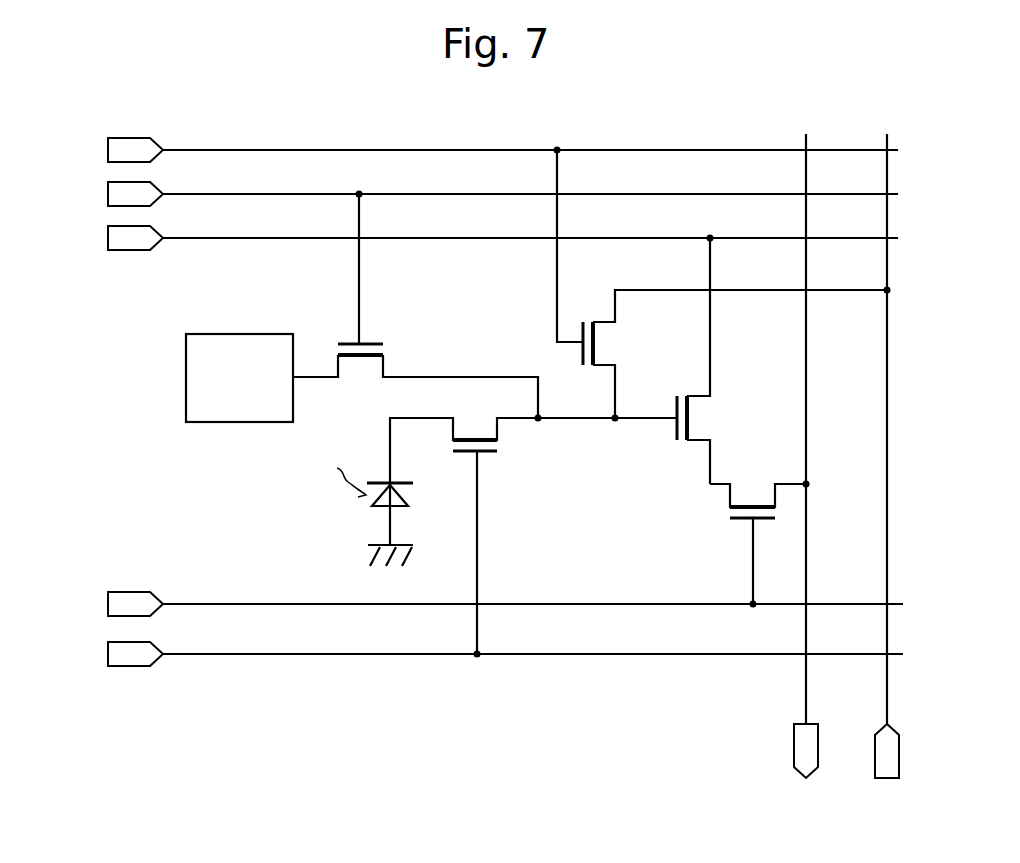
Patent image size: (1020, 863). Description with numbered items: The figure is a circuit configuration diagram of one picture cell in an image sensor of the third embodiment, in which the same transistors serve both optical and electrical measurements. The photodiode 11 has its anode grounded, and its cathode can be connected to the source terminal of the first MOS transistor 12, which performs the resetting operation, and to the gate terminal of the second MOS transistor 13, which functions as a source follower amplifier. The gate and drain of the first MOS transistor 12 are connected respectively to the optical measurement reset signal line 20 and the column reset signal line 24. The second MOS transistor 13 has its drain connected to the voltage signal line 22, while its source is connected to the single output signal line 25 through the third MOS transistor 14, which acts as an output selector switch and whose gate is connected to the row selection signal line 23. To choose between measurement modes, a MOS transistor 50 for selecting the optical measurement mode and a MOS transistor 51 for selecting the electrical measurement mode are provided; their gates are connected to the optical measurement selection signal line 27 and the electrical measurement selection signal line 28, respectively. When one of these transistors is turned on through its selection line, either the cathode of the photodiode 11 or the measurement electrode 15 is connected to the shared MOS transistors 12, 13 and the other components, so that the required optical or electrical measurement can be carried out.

The optical measurement reset signal line 20 is at (234, 150).
The electrical measurement selection signal line 28 is at (234, 194).
The voltage signal line 22 is at (234, 238).
The row selection signal line 23 is at (232, 604).
The optical measurement selection signal line 27 is at (232, 654).
The output signal line 25 is at (805, 680).
The column reset signal line 24 is at (885, 682).
The measurement electrode 15 is at (218, 334).
The MOS transistor for selecting the electrical measurement mode 51 is at (362, 372).
The MOS transistor for selecting the optical measurement mode 50 is at (478, 425).
The photodiode 11 is at (402, 498).
The first MOS transistor 12 is at (630, 343).
The second MOS transistor 13 is at (716, 412).
The third MOS transistor 14 is at (751, 480).